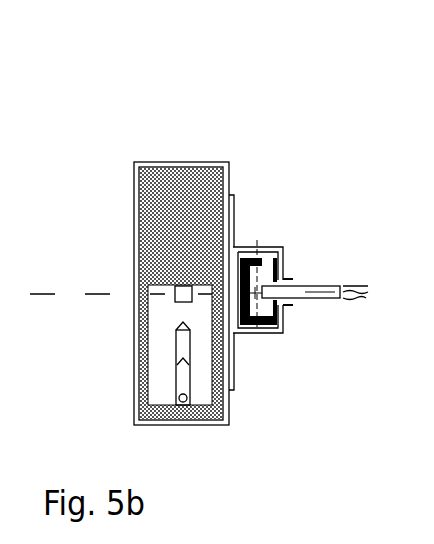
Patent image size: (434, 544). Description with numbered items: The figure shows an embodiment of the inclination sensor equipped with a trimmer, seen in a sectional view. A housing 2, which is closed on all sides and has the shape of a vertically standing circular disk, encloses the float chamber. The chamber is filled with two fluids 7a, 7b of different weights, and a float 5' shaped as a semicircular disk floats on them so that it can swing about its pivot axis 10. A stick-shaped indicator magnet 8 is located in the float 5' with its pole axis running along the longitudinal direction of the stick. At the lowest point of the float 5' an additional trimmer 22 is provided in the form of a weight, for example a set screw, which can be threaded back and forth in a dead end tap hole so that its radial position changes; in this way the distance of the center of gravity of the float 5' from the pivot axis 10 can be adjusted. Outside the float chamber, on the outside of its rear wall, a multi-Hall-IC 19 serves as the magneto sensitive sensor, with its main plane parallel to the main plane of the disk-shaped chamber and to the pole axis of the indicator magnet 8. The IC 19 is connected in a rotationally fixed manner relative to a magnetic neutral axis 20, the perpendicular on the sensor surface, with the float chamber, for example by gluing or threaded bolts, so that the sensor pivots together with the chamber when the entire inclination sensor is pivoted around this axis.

The housing 2 is at (145, 162).
The fluid 7a is at (133, 280).
The fluid 7b is at (167, 167).
The pivot axis 10 is at (98, 289).
The indicator magnet 8 is at (188, 302).
The float 5' is at (172, 337).
The trimmer 22 is at (182, 378).
The multi-Hall-IC 19 is at (256, 247).
The magnetic neutral axis 20 is at (368, 292).